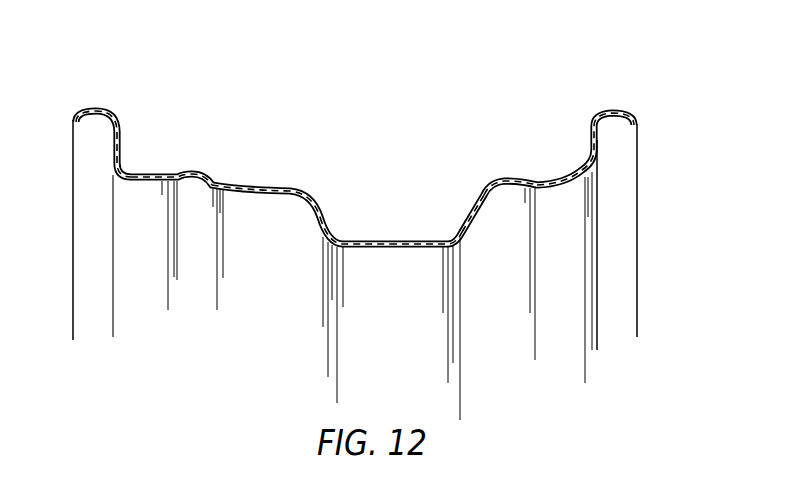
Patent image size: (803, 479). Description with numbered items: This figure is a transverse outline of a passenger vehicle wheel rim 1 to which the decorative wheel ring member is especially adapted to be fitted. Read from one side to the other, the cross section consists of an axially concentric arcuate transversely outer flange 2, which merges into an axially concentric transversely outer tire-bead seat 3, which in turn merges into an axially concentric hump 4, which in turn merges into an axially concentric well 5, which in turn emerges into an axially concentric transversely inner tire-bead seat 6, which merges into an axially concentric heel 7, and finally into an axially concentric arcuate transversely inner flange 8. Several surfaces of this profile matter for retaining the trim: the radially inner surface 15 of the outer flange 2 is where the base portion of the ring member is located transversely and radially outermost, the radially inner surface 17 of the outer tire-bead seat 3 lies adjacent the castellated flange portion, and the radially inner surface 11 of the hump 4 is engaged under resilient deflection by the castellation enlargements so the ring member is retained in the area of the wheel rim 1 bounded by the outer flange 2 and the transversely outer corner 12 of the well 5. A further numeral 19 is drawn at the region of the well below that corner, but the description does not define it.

The passenger wheel rim 1 is at (297, 186).
The transversely outer flange 2 is at (615, 110).
The transversely outer tire-bead seat 3 is at (537, 178).
The hump 4 is at (497, 176).
The well 5 is at (347, 238).
The transversely inner tire-bead seat 6 is at (155, 172).
The heel 7 is at (128, 163).
The transversely inner flange 8 is at (95, 107).
The radially inner surface of hump 11 is at (498, 188).
The transversely outer corner of well 12 is at (444, 238).
The radially inner surface of outer flange 15 is at (624, 120).
The radially inner surface of outer tire-bead seat 17 is at (537, 188).
The well bottom corner 19 is at (453, 243).